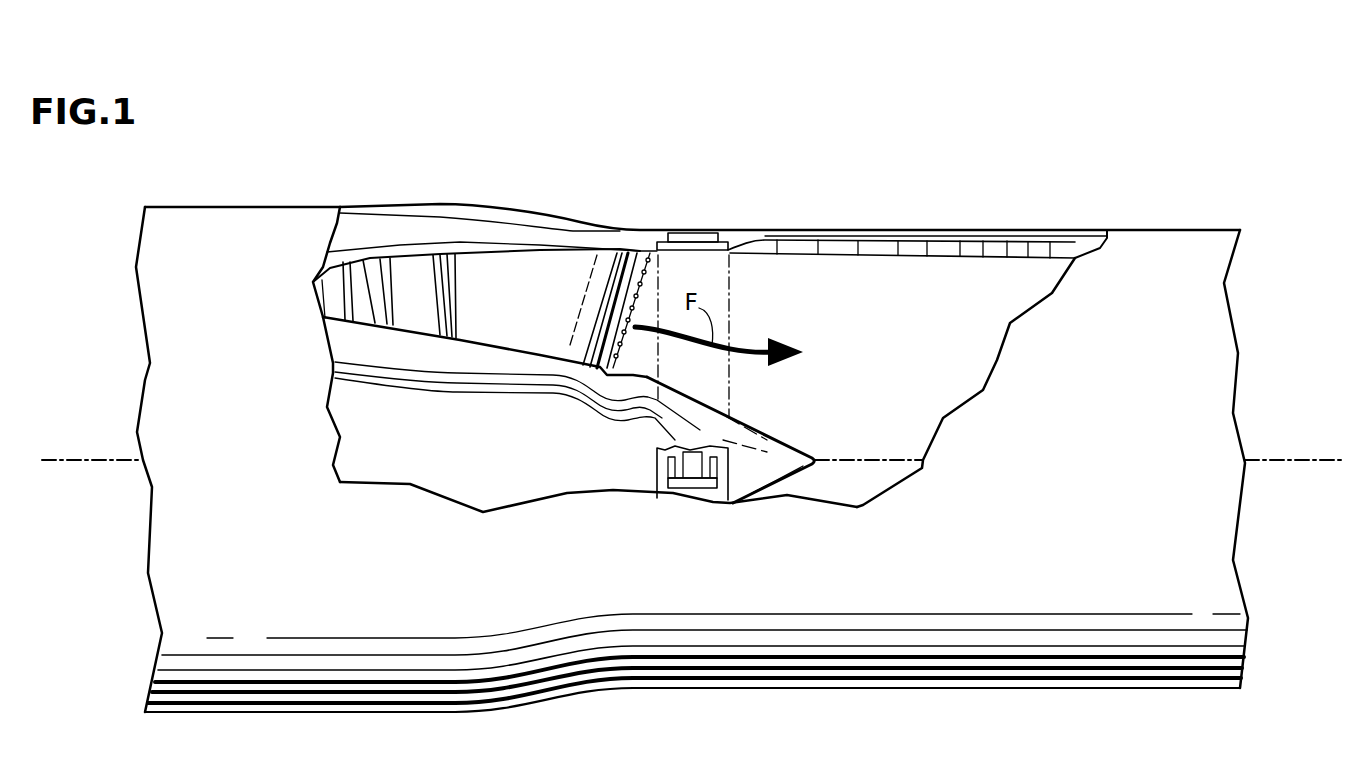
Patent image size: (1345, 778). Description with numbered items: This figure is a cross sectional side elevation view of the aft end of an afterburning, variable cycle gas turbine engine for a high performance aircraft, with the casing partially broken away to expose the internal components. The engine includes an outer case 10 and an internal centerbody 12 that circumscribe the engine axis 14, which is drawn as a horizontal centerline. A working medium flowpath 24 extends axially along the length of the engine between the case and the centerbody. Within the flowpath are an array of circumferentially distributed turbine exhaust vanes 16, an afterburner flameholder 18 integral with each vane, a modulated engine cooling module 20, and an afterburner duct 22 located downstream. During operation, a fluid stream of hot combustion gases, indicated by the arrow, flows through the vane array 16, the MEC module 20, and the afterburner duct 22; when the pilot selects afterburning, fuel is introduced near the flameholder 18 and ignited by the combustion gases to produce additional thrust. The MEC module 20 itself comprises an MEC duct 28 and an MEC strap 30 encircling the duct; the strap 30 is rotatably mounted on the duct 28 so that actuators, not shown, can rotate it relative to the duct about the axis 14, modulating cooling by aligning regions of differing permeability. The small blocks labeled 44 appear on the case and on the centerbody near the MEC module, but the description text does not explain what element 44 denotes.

The outer case 10 is at (1098, 230).
The internal centerbody 12 is at (502, 467).
The engine axis 14 is at (1297, 460).
The turbine exhaust vanes 16 is at (505, 316).
The afterburner flameholder 18 is at (640, 250).
The modulated engine cooling (MEC) module 20 is at (735, 230).
The afterburner duct 22 is at (913, 245).
The working medium flowpath 24 is at (794, 316).
The MEC duct 28 is at (670, 450).
The MEC strap 30 is at (672, 467).
The abradable coating block 44 is at (692, 238).